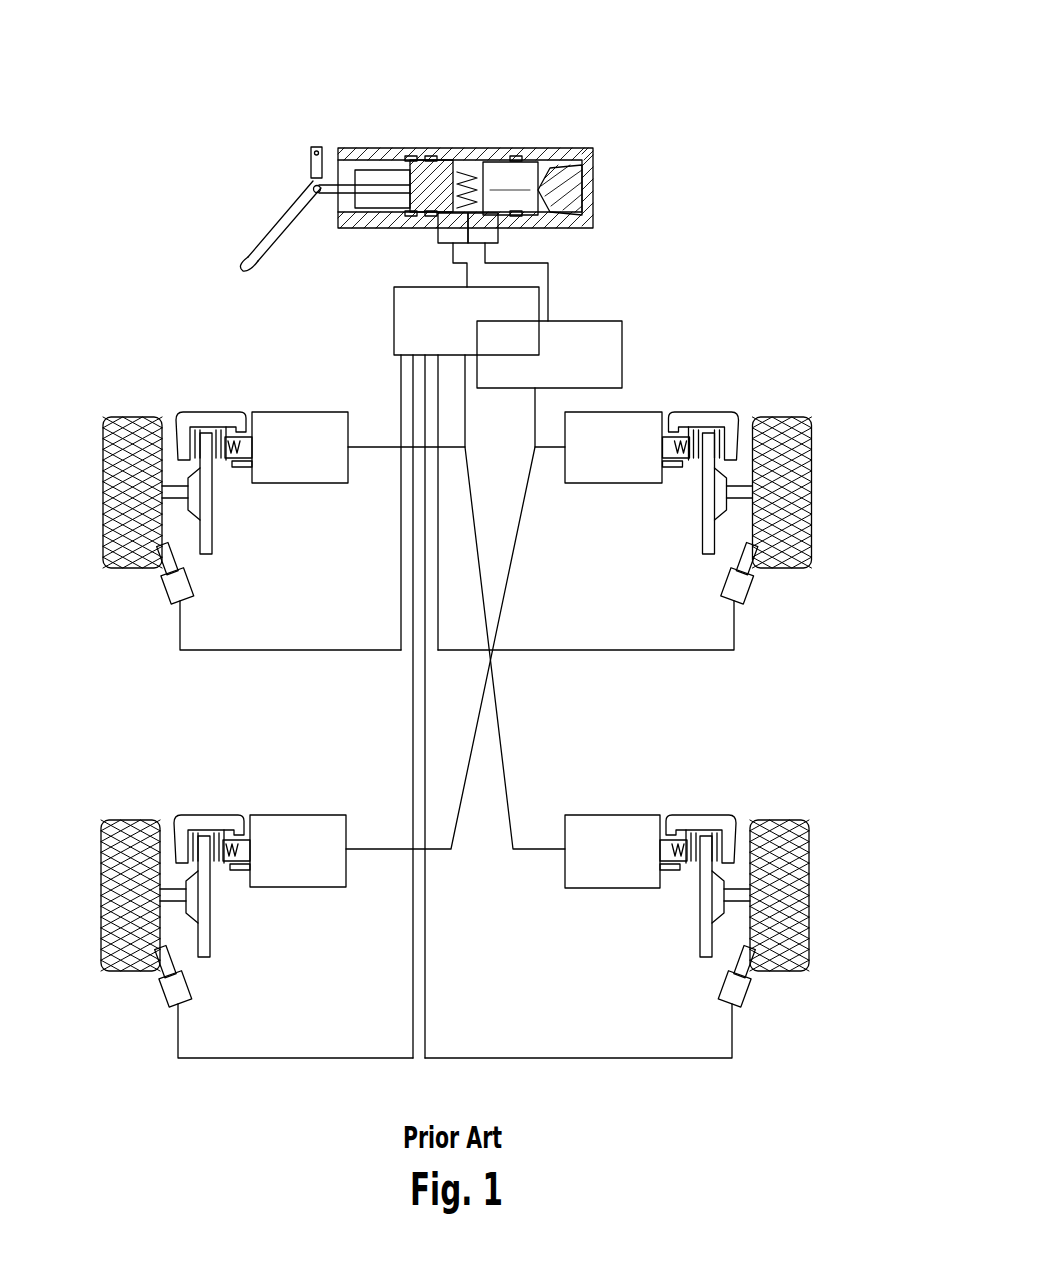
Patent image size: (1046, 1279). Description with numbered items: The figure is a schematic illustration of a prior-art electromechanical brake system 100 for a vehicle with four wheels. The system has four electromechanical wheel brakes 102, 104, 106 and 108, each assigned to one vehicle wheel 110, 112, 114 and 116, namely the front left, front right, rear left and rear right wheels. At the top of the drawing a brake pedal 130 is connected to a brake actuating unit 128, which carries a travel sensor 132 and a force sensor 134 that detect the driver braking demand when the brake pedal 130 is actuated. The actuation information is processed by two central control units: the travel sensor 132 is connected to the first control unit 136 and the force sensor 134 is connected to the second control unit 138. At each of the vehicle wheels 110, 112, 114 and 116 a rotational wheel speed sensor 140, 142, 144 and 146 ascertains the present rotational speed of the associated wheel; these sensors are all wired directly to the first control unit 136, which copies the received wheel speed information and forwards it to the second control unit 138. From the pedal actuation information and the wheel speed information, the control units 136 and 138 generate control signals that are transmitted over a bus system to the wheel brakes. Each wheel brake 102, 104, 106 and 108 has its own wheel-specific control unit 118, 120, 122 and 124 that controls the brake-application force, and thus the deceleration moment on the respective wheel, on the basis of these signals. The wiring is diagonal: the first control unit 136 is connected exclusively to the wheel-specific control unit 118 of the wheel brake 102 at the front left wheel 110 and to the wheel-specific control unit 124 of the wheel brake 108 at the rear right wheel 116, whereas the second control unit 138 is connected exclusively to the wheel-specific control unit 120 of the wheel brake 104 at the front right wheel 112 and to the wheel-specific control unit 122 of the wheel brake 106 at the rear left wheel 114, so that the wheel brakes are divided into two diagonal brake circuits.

The brake system 100 is at (717, 91).
The wheel brake 102 is at (210, 412).
The wheel brake 104 is at (704, 412).
The wheel brake 106 is at (210, 815).
The wheel brake 108 is at (704, 815).
The vehicle wheel 110 is at (125, 417).
The vehicle wheel 112 is at (782, 417).
The vehicle wheel 114 is at (125, 820).
The vehicle wheel 116 is at (782, 822).
The wheel-specific control unit 118 is at (300, 483).
The wheel-specific control unit 120 is at (616, 485).
The wheel-specific control unit 122 is at (300, 888).
The wheel-specific control unit 124 is at (613, 888).
The brake actuating unit 128 is at (527, 148).
The brake pedal 130 is at (285, 212).
The travel sensor 132 is at (440, 241).
The force sensor 134 is at (498, 240).
The first control unit 136 is at (394, 327).
The second control unit 138 is at (622, 335).
The rotational wheel speed sensor 140 is at (192, 583).
The rotational wheel speed sensor 142 is at (721, 585).
The rotational wheel speed sensor 144 is at (190, 986).
The rotational wheel speed sensor 146 is at (722, 990).